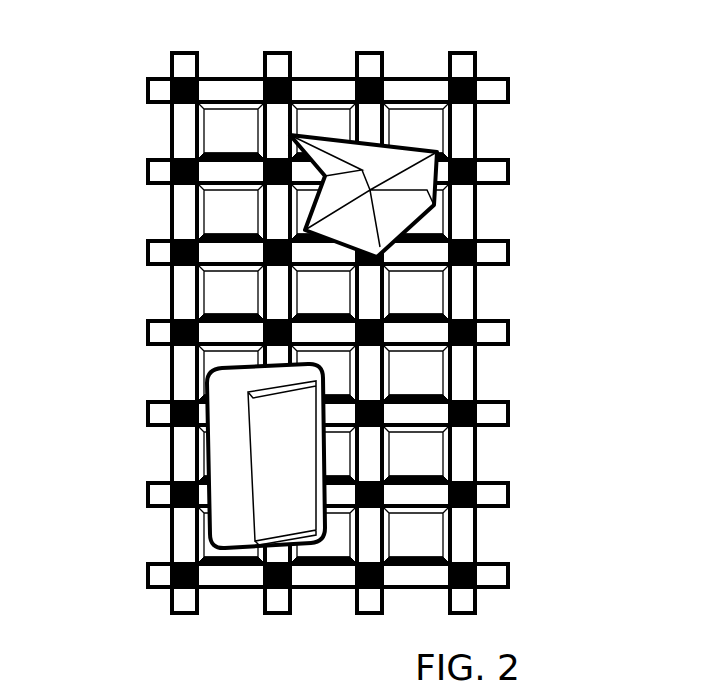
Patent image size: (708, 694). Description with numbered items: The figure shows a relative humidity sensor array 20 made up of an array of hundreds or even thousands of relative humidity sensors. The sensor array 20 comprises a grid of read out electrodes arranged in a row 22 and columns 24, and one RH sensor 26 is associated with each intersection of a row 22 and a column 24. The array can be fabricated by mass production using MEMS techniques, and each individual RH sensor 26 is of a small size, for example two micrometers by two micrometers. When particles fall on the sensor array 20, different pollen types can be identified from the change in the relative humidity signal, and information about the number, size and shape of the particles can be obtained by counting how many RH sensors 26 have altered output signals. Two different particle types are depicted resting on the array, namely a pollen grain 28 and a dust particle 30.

The relative humidity sensor array 20 is at (344, 306).
The row 22 is at (147, 257).
The columns 24 is at (266, 53).
The RH sensor 26 is at (404, 306).
The pollen grain 28 is at (387, 193).
The dust particle 30 is at (312, 502).